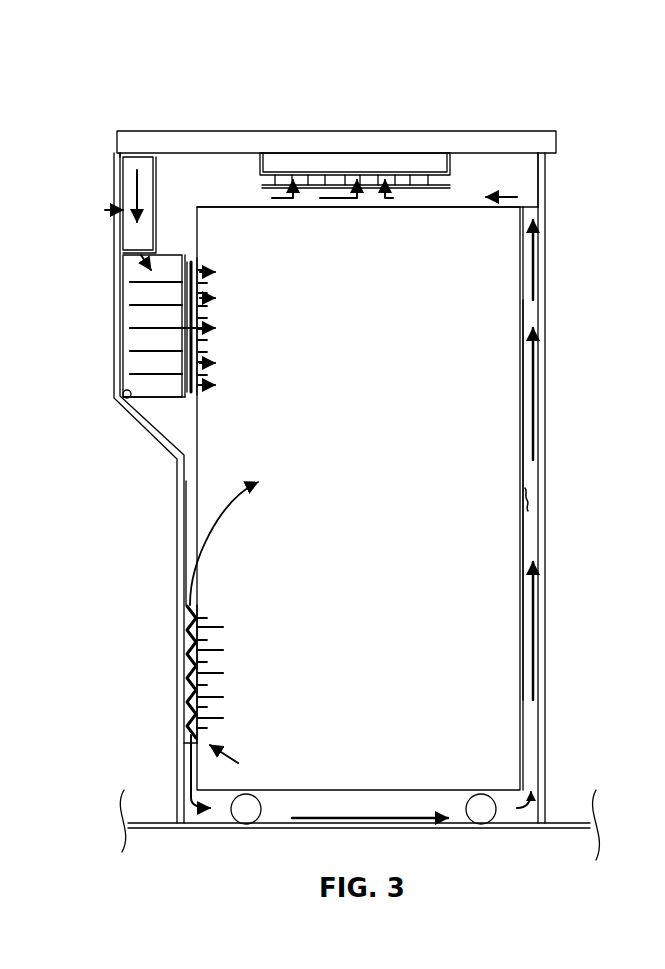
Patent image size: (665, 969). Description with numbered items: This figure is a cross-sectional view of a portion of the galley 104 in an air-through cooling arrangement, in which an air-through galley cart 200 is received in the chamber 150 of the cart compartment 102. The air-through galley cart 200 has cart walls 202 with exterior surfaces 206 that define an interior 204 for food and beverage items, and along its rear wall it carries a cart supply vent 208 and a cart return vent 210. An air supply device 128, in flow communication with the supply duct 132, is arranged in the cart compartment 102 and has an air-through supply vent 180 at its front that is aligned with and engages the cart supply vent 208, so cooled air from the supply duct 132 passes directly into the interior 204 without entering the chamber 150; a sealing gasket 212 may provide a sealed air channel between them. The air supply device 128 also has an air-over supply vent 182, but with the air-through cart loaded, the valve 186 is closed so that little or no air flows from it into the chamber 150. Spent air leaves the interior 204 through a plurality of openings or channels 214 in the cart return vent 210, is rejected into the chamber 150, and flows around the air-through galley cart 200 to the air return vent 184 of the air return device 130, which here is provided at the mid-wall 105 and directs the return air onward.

The galley 104 is at (542, 98).
The mid-wall 105 is at (500, 136).
The cart compartment 102 is at (516, 186).
The air return device 130 is at (397, 161).
The air return vent 184 is at (370, 182).
The cart walls 202 is at (475, 204).
The exterior surfaces 206 is at (245, 206).
The supply duct 132 is at (128, 222).
The air supply device 128 is at (133, 318).
The sealing gasket 212 is at (190, 272).
The air-through supply vent 180 is at (199, 299).
The cart supply vent 208 is at (204, 374).
The valve 186 is at (131, 401).
The air-over supply vent 182 is at (158, 405).
The interior 204 is at (483, 394).
The air-through galley cart 200 is at (521, 533).
The cart return vent 210 is at (201, 690).
The openings or channels 214 is at (201, 732).
The chamber 150 is at (291, 798).